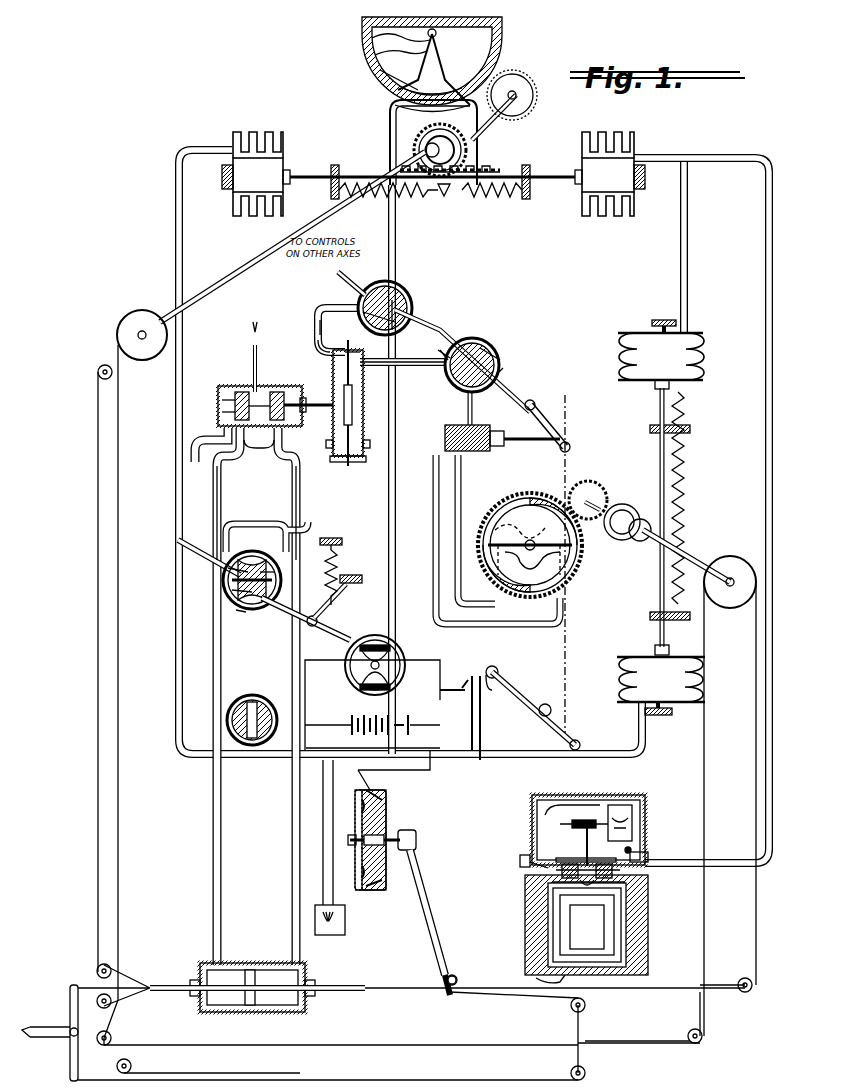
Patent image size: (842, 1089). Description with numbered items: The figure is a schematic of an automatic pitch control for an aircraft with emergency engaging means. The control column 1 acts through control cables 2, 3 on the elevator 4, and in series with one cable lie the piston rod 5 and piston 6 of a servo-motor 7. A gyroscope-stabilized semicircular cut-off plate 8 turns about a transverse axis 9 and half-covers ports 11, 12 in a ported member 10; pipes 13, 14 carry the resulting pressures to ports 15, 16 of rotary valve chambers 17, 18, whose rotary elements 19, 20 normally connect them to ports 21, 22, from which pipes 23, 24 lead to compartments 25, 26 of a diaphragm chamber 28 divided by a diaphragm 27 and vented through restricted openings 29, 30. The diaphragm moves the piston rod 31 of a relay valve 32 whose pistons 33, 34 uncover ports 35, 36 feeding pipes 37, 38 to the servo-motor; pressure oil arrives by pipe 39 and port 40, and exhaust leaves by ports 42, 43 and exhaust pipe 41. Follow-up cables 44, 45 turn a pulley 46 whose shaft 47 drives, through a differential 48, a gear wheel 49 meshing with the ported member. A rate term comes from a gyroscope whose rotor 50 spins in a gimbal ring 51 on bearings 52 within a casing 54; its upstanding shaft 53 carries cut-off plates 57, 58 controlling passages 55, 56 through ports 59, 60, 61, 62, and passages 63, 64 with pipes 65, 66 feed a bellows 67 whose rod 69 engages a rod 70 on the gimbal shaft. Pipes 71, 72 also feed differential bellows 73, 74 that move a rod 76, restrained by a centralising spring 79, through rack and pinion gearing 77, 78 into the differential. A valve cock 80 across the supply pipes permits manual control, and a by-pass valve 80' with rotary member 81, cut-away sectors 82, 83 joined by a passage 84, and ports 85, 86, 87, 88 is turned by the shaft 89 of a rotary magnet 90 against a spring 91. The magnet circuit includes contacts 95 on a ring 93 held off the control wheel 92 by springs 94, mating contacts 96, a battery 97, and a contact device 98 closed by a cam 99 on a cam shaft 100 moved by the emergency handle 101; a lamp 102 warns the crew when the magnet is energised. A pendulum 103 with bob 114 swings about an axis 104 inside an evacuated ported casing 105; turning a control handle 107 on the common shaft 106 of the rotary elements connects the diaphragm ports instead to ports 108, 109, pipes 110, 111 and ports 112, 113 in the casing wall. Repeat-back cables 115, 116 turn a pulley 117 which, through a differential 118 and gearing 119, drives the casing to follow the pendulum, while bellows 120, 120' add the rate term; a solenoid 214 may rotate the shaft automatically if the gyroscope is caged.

The control column 1 is at (436, 884).
The control cable 2 is at (406, 990).
The control cable 3 is at (430, 1046).
The elevator 4 is at (48, 1020).
The piston rod 5 is at (322, 978).
The piston 6 is at (250, 968).
The servo-motor 7 is at (270, 1012).
The semicircular cut-off plate 8 is at (508, 496).
The horizontal axis 9 is at (492, 510).
The ported member 10 is at (582, 560).
The port 11 is at (482, 545).
The port 12 is at (586, 548).
The pipe 13 is at (466, 600).
The pipe 14 is at (572, 606).
The port 15 is at (396, 352).
The port 16 is at (468, 410).
The rotary valve chamber 17 is at (412, 308).
The rotary valve chamber 18 is at (506, 364).
The rotary element 19 is at (410, 296).
The rotary element 20 is at (498, 348).
The port 21 is at (360, 296).
The port 22 is at (444, 370).
The pipe 23 is at (314, 308).
The pipe 24 is at (408, 372).
The compartment 25 is at (314, 352).
The compartment 26 is at (362, 356).
The diaphragm 27 is at (363, 425).
The diaphragm chamber 28 is at (346, 462).
The restricted opening 29 is at (328, 448).
The restricted opening 30 is at (370, 448).
The piston rod 31 is at (310, 405).
The piston type relay valve 32 is at (218, 388).
The piston 33 is at (238, 392).
The piston 34 is at (270, 392).
The port 35 is at (220, 402).
The port 36 is at (256, 452).
The pipe 37 is at (222, 500).
The pipe 38 is at (290, 500).
The pipe 39 is at (250, 348).
The port 40 is at (244, 392).
The exhaust pipe 41 is at (197, 446).
The port 42 is at (220, 414).
The port 43 is at (306, 416).
The cable 44 is at (640, 996).
The cable 45 is at (636, 1042).
The pulley 46 is at (738, 558).
The shaft 47 is at (694, 546).
The differential 48 is at (634, 542).
The gear wheel 49 is at (590, 486).
The rotor 50 is at (600, 932).
The gimbal ring 51 is at (612, 950).
The bearings 52 is at (532, 816).
The upstanding shaft 53 is at (532, 796).
The casing 54 is at (532, 928).
The passage 55 is at (556, 870).
The passage 56 is at (612, 870).
The cut-off plate 57 is at (612, 872).
The cut-off plate 58 is at (586, 840).
The port 59 is at (556, 858).
The port 60 is at (630, 848).
The port 61 is at (560, 884).
The port 62 is at (596, 884).
The passage 63 is at (530, 864).
The passage 64 is at (648, 856).
The pipe 65 is at (565, 800).
The pipe 66 is at (632, 826).
The bellows 67 is at (612, 800).
The rod 69 is at (632, 808).
The rod 70 is at (590, 800).
The pipe 71 is at (181, 150).
The pipe 72 is at (730, 160).
The bellows 73 is at (624, 656).
The bellows 74 is at (692, 386).
The rod 76 is at (658, 618).
The rack 77 is at (660, 478).
The pinion 78 is at (642, 504).
The centralising spring 79 is at (686, 496).
The valve cock 80 is at (252, 711).
The by-pass valve 80' is at (252, 600).
The rotary member 81 is at (230, 590).
The cut-away sector 82 is at (230, 580).
The cut-away sector 83 is at (275, 572).
The passage 84 is at (226, 568).
The port 85 is at (300, 532).
The port 86 is at (234, 610).
The port 87 is at (222, 540).
The port 88 is at (282, 630).
The shaft 89 is at (340, 638).
The rotary magnet 90 is at (345, 668).
The spring 91 is at (334, 562).
The control wheel 92 is at (364, 826).
The ring 93 is at (388, 856).
The springs 94 is at (394, 838).
The contacts 95 is at (386, 800).
The contacts 96 is at (358, 804).
The battery 97 is at (374, 734).
The contact device 98 is at (468, 688).
The cam 99 is at (490, 694).
The cam shaft 100 is at (525, 688).
The handle 101 is at (570, 742).
The lamp 102 is at (346, 920).
The pendulum 103 is at (398, 58).
The axis 104 is at (372, 38).
The casing 105 is at (500, 40).
The shaft 106 is at (432, 340).
The control handle 107 is at (534, 400).
The port 108 is at (390, 280).
The port 109 is at (480, 330).
The pipe 110 is at (390, 123).
The pipe 111 is at (480, 160).
The port 112 is at (385, 95).
The port 113 is at (470, 132).
The bob 114 is at (380, 70).
The repeat-back cable 115 is at (98, 498).
The repeat-back cable 116 is at (180, 540).
The pulley 117 is at (128, 315).
The differential 118 is at (425, 148).
The gearing 119 is at (512, 74).
The bellows 120 is at (240, 165).
The bellows 120' is at (620, 165).
The solenoid 214 is at (490, 451).